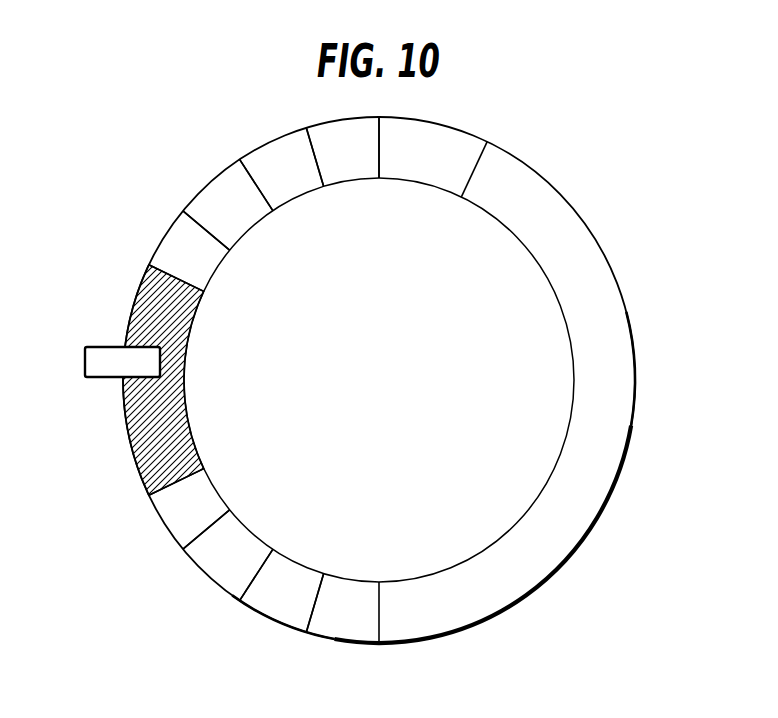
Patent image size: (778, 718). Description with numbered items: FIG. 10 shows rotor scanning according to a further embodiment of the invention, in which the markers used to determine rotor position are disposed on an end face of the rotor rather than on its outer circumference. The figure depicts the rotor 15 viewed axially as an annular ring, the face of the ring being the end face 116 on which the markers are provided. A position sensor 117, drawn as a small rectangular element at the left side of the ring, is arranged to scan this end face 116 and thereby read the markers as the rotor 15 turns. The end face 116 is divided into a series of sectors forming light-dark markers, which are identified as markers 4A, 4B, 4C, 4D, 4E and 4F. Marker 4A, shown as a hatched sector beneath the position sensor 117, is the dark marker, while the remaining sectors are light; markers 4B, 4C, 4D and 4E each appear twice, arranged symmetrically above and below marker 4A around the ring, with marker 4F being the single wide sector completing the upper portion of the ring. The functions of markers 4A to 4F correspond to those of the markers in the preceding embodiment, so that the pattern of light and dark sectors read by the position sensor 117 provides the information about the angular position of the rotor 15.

The rotor 15 is at (558, 173).
The end face 116 is at (527, 565).
The position sensor 117 is at (107, 374).
The light-dark marker 4A is at (169, 380).
The light-dark marker 4B is at (206, 380).
The light-dark marker 4C is at (243, 379).
The light-dark marker 4D is at (293, 380).
The light-dark marker 4E is at (349, 380).
The light-dark marker 4F is at (433, 176).